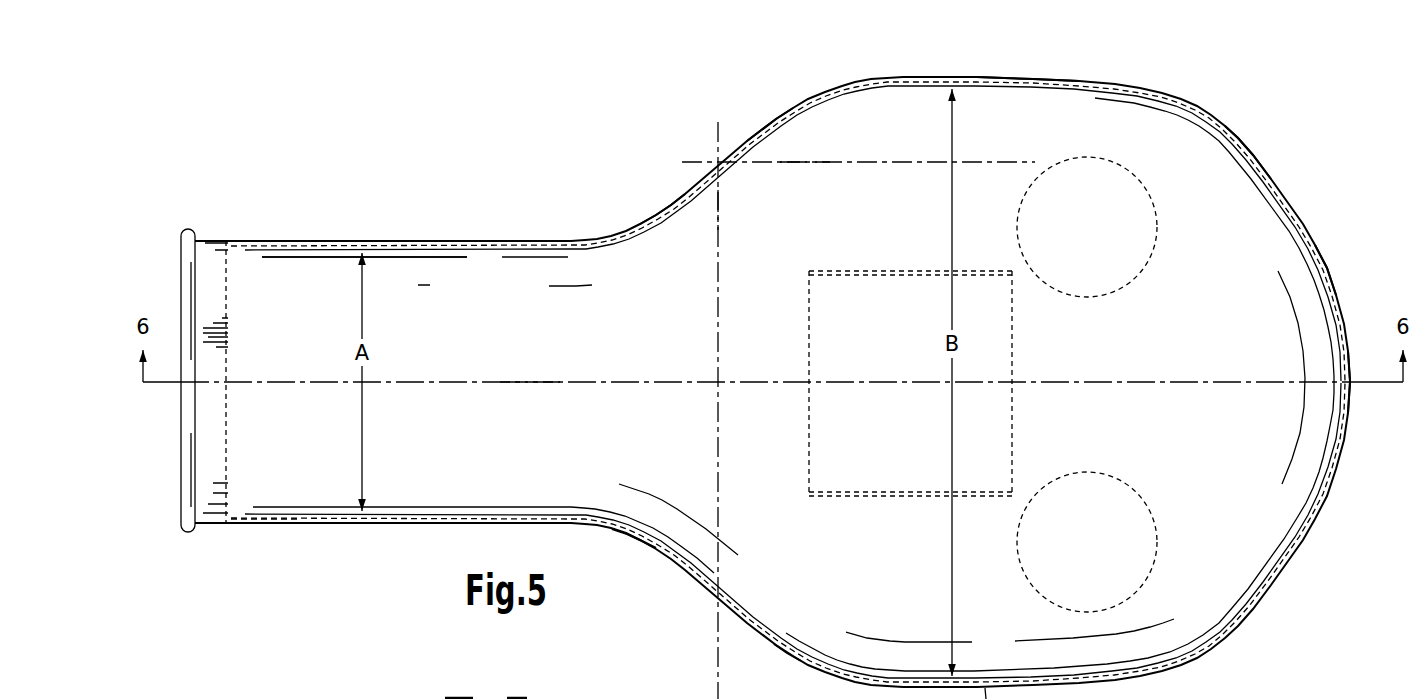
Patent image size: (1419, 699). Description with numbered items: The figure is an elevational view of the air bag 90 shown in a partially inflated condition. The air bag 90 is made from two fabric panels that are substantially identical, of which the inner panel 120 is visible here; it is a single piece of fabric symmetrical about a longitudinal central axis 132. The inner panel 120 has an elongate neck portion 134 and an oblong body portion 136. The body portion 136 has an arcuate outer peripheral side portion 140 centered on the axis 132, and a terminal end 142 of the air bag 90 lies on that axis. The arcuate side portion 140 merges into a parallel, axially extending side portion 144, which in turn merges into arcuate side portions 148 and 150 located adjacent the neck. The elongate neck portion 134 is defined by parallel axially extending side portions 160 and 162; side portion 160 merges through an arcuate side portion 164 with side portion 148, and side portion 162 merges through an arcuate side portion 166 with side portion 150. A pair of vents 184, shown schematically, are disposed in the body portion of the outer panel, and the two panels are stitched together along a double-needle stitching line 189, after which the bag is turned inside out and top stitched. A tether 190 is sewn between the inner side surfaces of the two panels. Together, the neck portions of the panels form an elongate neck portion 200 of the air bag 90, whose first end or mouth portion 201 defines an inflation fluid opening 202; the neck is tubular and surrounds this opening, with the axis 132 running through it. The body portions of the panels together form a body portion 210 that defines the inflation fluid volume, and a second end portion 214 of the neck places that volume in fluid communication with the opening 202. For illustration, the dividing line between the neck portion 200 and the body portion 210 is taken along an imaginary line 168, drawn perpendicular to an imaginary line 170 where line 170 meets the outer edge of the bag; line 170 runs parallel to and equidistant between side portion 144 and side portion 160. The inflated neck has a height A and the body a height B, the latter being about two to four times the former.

The air bag 90 is at (596, 141).
The inner panel 120 is at (917, 118).
The longitudinal central axis 132 is at (528, 380).
The elongate neck portion 134 is at (490, 315).
The oblong body portion 136 is at (1242, 253).
The arcuate outer peripheral side portion 140 is at (1323, 260).
The terminal end 142 is at (1352, 385).
The axially extending side portion 144 is at (993, 77).
The arcuate side portion 148 is at (763, 127).
The arcuate side portion 150 is at (790, 653).
The axially extending side portion 160 is at (496, 241).
The axially extending side portion 162 is at (417, 524).
The arcuate side portion 164 is at (662, 213).
The arcuate side portion 166 is at (628, 538).
The imaginary line 168 is at (718, 208).
The imaginary line 170 is at (802, 162).
The vents 184 is at (1120, 263).
The double-needle stitching line 189 is at (263, 518).
The tether 190 is at (1012, 433).
The elongate neck portion 200 is at (415, 240).
The mouth portion 201 is at (218, 232).
The inflation fluid opening 202 is at (182, 295).
The body portion 210 is at (1230, 128).
The second end portion 214 is at (667, 565).